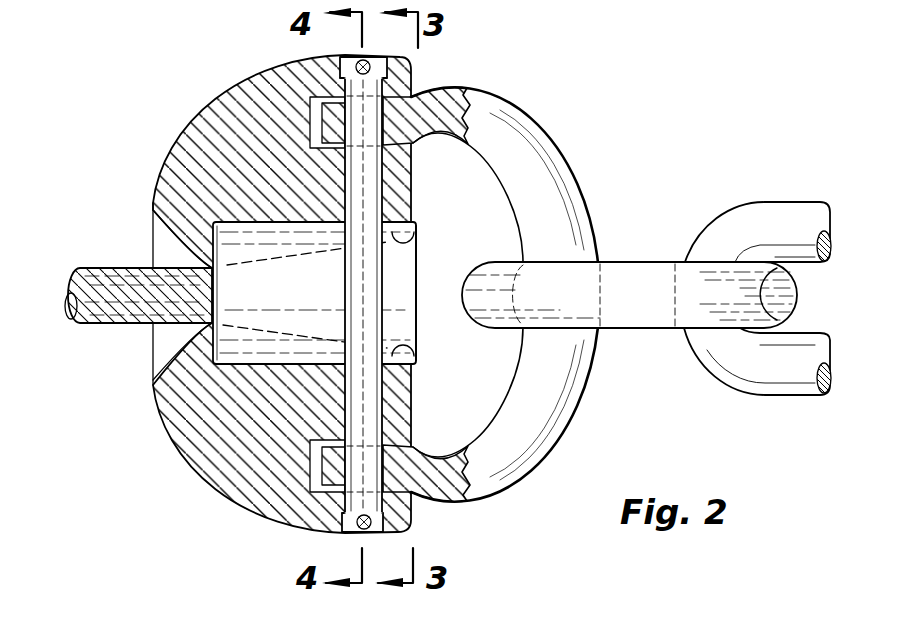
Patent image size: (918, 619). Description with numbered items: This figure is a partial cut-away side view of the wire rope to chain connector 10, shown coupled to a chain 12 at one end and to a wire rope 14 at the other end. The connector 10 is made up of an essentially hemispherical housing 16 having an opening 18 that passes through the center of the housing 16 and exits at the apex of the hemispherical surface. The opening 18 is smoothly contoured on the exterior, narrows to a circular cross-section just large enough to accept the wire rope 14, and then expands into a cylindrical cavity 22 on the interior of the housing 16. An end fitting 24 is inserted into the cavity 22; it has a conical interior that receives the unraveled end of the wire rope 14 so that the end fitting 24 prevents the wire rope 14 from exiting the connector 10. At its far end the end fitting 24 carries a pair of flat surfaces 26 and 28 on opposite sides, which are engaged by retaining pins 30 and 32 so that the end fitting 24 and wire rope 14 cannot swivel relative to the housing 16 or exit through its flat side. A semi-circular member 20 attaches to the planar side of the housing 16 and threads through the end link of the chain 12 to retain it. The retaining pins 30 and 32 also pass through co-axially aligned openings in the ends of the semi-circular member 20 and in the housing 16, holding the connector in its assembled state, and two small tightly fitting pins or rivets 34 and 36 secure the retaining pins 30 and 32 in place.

The connector 10 is at (448, 298).
The chain 12 is at (767, 207).
The wire rope 14 is at (137, 305).
The hemispherical housing 16 is at (200, 112).
The opening 18 is at (160, 252).
The semi-circular member 20 is at (560, 203).
The cylindrical cavity 22 is at (416, 224).
The end fitting 24 is at (418, 264).
The flat surface 26 is at (404, 241).
The flat surface 28 is at (410, 350).
The retaining pin 30 is at (364, 51).
The retaining pin 32 is at (363, 540).
The pin 34 is at (343, 59).
The pin 36 is at (357, 523).